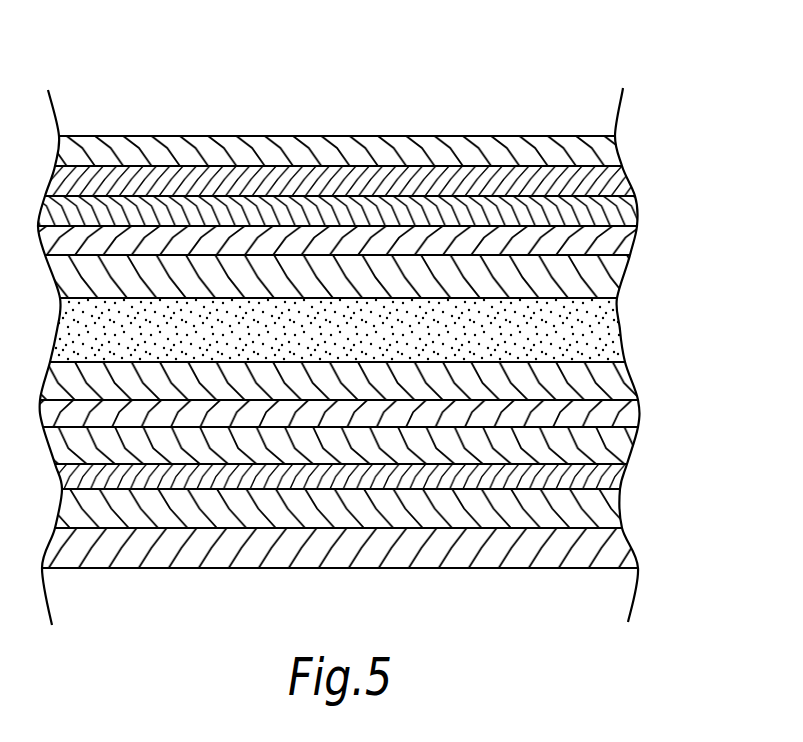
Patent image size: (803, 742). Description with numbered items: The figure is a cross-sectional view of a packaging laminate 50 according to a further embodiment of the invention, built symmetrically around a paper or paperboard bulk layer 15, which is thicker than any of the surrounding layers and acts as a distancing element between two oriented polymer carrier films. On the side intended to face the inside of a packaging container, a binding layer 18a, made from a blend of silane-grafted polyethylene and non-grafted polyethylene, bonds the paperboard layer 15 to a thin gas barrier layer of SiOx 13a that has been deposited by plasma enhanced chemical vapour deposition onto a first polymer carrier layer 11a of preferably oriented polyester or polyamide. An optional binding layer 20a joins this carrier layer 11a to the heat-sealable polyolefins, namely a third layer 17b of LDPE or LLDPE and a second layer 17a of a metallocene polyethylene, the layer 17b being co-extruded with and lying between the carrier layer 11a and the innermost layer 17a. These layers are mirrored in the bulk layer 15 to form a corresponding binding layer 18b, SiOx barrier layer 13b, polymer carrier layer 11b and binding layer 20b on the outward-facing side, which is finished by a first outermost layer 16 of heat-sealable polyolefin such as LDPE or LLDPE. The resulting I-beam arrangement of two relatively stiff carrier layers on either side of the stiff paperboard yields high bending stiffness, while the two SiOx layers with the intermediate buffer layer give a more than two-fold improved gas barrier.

The packaging laminate 50 is at (499, 104).
The first outermost layer of heat-sealable polyolefin 16 is at (600, 152).
The binding layer 20b is at (613, 180).
The polymer carrier layer 11b is at (622, 208).
The gas barrier layer of SiOx 13b is at (620, 235).
The binding layer 18b is at (612, 272).
The paper or paperboard bulk layer 15 is at (603, 330).
The binding layer 18a is at (610, 382).
The gas barrier layer of SiOx 13a is at (622, 410).
The first polymer carrier layer 11a is at (617, 445).
The binding layer 20a is at (612, 475).
The third layer of heat-sealable polyolefin 17b is at (608, 510).
The second layer of heat-sealable polyolefin 17a is at (625, 553).